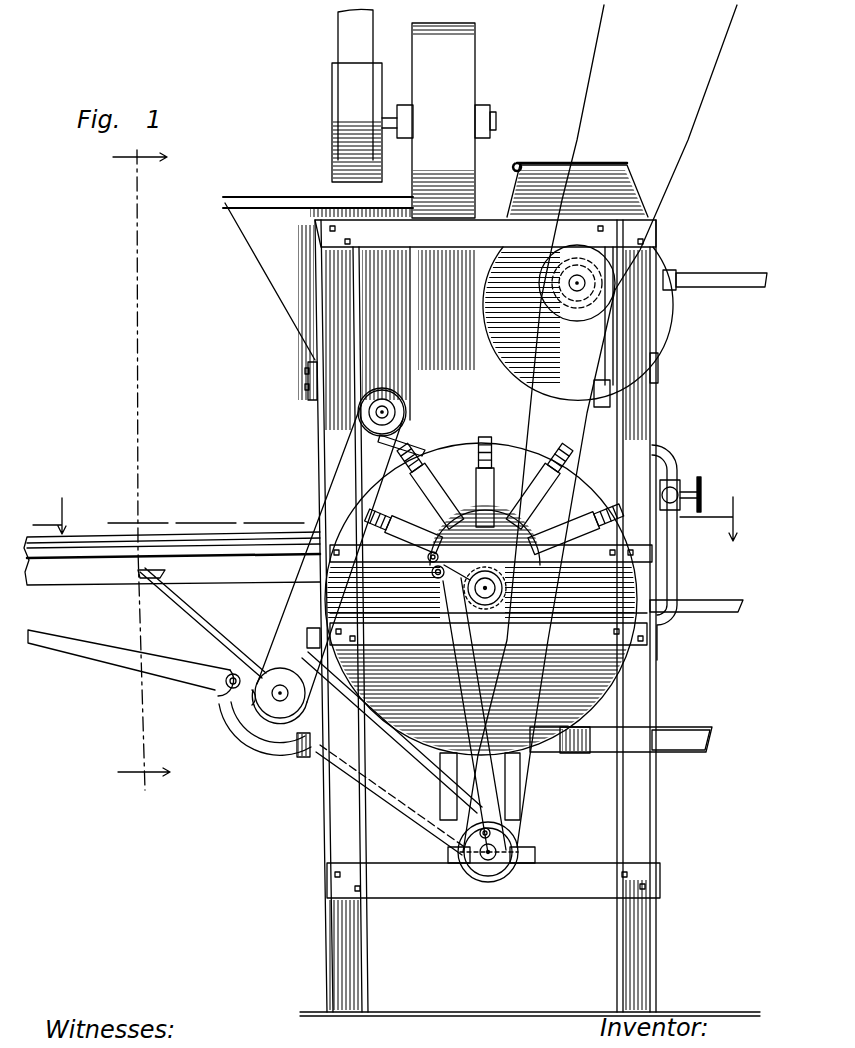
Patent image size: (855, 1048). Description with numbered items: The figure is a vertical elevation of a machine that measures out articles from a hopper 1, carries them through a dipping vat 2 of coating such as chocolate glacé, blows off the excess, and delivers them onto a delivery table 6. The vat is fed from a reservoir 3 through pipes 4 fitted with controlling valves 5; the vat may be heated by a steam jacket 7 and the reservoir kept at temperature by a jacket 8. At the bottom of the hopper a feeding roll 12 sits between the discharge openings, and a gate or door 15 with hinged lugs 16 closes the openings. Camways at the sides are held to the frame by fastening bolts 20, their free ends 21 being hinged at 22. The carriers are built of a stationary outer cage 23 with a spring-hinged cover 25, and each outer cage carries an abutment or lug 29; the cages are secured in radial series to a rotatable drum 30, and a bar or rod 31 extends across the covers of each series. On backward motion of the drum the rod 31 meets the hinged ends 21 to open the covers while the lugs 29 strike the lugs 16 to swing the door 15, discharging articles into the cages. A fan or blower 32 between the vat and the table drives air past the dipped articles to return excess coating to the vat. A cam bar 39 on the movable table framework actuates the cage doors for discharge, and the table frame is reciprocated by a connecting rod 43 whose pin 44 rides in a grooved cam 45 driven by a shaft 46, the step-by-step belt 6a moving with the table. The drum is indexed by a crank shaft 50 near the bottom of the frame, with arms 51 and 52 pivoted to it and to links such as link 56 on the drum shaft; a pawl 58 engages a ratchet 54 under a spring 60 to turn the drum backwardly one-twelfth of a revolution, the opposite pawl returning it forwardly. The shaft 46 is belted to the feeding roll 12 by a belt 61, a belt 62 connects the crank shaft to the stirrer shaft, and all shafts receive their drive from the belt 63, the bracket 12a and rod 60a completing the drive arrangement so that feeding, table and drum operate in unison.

The hopper 1 is at (278, 300).
The dipping vat 2 is at (529, 618).
The reservoir 3 is at (141, 472).
The pipes 4 is at (677, 555).
The controlling valves 5 is at (705, 478).
The delivery table 6 is at (77, 552).
The belt 6a is at (90, 540).
The steam jacket 7 is at (568, 753).
The jacket 8 is at (657, 222).
The feeding roll 12 is at (405, 392).
The pulley bracket 12a is at (412, 420).
The gate or door 15 is at (448, 440).
The lugs 16 is at (404, 531).
The fastening bolts 20 is at (365, 520).
The free ends of the guides 21 is at (405, 522).
The hinge 22 is at (395, 500).
The stationary outer cage 23 is at (470, 480).
The cover 25 is at (480, 440).
The abutment or lug 29 is at (486, 450).
The rotatable drum 30 is at (470, 498).
The bar or rod 31 is at (566, 488).
The fan or blower 32 is at (472, 66).
The cam bar 39 is at (427, 557).
The connecting rod 43 is at (95, 655).
The pin 44 is at (228, 688).
The grooved cam 45 is at (260, 754).
The shaft 46 is at (276, 697).
The crank shaft 50 is at (486, 862).
The arm 51 is at (565, 760).
The arm 52 is at (462, 696).
The ratchet 54 is at (486, 610).
The link 56 is at (436, 592).
The pawl 58 is at (485, 577).
The spring / belt 60 is at (485, 535).
The connecting rod 60a is at (400, 812).
The belt 61 is at (318, 498).
The belt 62 is at (536, 400).
The belt 63 is at (692, 126).